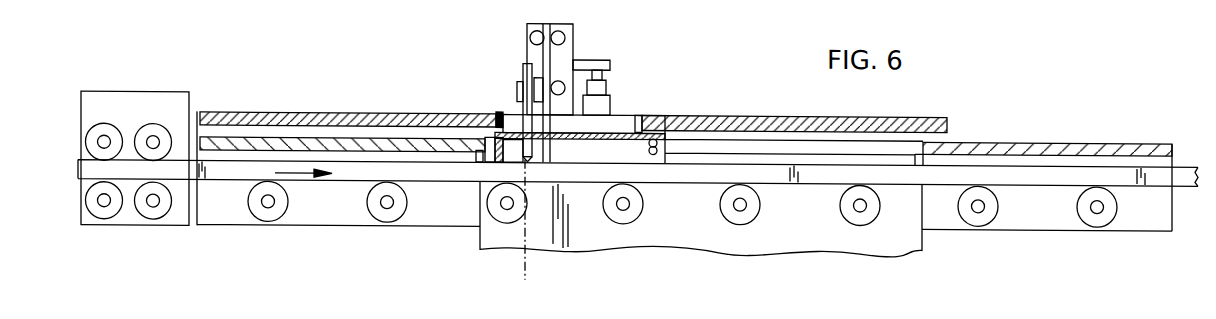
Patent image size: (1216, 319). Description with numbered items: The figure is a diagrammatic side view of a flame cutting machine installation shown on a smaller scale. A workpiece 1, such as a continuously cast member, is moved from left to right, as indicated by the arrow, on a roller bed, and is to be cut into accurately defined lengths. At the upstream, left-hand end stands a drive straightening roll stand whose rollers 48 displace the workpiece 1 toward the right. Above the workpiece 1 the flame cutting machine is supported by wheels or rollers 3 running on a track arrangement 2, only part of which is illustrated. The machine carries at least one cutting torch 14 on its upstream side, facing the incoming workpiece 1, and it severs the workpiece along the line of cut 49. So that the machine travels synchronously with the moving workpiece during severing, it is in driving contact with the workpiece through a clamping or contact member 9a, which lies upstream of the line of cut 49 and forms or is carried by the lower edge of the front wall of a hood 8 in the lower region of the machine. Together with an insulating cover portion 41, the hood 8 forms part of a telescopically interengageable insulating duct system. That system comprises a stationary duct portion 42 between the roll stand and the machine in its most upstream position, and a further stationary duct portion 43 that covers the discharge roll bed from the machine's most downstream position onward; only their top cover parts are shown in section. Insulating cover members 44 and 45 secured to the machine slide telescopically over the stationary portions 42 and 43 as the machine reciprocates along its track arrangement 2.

The workpiece 1 is at (1180, 184).
The track arrangement 2 is at (688, 155).
The rollers 3 is at (653, 152).
The hood 8 is at (492, 140).
The clamping or contact member 9a is at (500, 159).
The cutting torch 14 is at (522, 68).
The insulating cover portion 41 is at (622, 112).
The stationary duct portion 42 is at (278, 139).
The stationary duct portion 43 is at (1043, 145).
The insulating cover member 44 is at (352, 110).
The insulating cover member 45 is at (722, 115).
The rollers 48 is at (147, 213).
The line of cut 49 is at (527, 261).